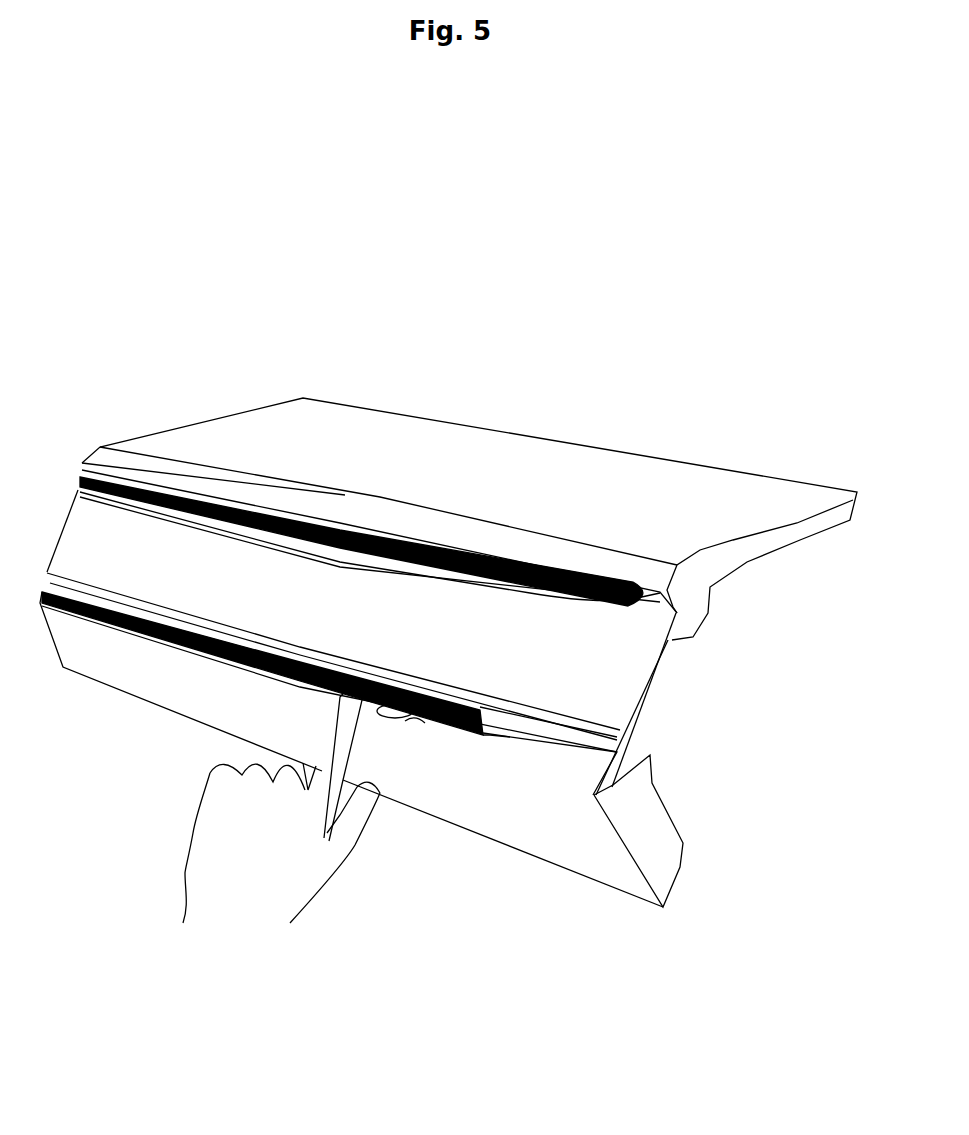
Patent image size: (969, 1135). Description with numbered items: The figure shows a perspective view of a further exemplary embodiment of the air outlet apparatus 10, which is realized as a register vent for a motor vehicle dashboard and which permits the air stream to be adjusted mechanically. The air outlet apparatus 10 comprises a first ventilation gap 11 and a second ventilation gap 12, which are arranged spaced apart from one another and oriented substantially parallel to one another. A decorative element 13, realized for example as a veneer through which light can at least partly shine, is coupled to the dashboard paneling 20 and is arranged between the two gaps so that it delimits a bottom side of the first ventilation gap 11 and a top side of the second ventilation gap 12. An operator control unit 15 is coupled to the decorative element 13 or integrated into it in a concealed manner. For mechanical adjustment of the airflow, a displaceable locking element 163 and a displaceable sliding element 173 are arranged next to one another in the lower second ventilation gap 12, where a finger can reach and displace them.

The air outlet apparatus 10 is at (713, 325).
The first ventilation gap 11 is at (278, 527).
The second ventilation gap 12 is at (130, 613).
The decorative element 13 is at (408, 623).
The operator control unit 15 is at (570, 698).
The dashboard paneling 20 is at (360, 443).
The locking element 163 is at (510, 737).
The sliding element 173 is at (427, 702).